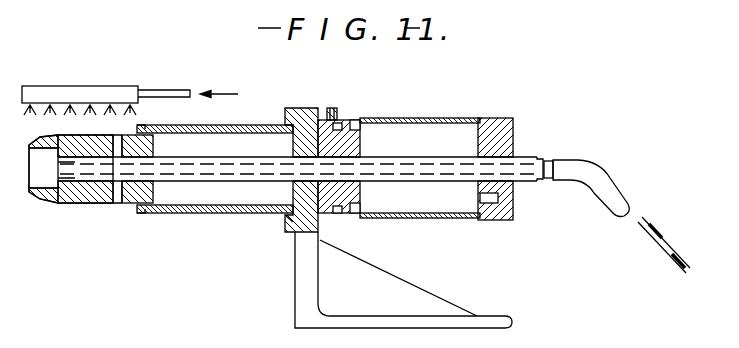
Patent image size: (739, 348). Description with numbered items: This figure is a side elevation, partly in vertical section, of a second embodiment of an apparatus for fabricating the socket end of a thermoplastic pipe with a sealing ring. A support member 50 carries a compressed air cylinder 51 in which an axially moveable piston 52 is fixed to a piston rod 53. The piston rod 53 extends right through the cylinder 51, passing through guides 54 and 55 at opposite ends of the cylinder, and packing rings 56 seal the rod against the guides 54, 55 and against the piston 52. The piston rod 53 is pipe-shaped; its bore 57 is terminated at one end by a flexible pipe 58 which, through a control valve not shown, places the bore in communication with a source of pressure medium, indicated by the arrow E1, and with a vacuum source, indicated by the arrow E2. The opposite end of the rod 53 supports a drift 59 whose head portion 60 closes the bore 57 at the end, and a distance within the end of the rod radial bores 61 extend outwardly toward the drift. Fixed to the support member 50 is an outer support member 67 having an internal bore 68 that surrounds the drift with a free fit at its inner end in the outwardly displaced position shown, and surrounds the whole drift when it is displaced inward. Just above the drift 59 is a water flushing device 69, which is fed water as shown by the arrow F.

The support member 50 is at (303, 298).
The compressed air cylinder 51 is at (428, 118).
The piston 52 is at (357, 120).
The piston rod 53 is at (434, 163).
The guide 54 is at (513, 150).
The guide 55 is at (318, 110).
The packing rings 56 is at (292, 229).
The bore 57 is at (521, 169).
The flexible pipe 58 is at (604, 173).
The drift 59 is at (92, 205).
The head portion 60 is at (44, 184).
The radial bores 61 is at (130, 205).
The outer support member 67 is at (205, 213).
The internal bore 68 is at (236, 128).
The water flushing device 69 is at (87, 97).
The arrow F is at (220, 92).
The arrow E1 is at (661, 237).
The arrow E2 is at (662, 251).